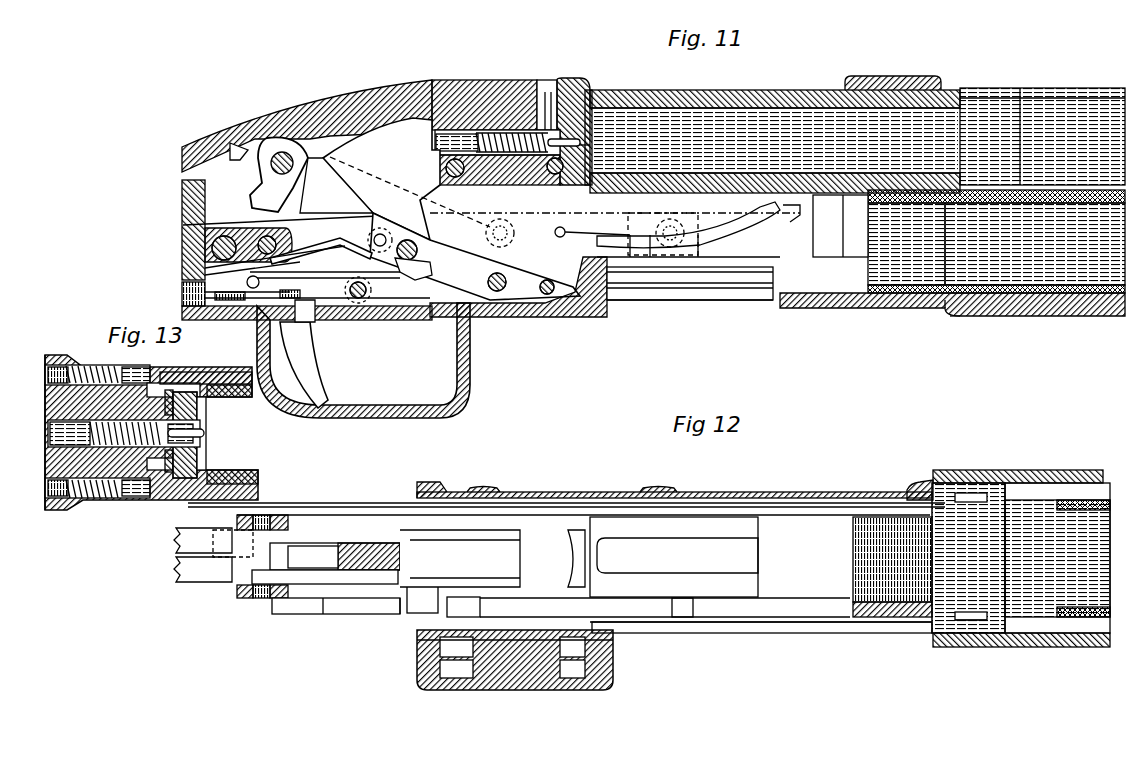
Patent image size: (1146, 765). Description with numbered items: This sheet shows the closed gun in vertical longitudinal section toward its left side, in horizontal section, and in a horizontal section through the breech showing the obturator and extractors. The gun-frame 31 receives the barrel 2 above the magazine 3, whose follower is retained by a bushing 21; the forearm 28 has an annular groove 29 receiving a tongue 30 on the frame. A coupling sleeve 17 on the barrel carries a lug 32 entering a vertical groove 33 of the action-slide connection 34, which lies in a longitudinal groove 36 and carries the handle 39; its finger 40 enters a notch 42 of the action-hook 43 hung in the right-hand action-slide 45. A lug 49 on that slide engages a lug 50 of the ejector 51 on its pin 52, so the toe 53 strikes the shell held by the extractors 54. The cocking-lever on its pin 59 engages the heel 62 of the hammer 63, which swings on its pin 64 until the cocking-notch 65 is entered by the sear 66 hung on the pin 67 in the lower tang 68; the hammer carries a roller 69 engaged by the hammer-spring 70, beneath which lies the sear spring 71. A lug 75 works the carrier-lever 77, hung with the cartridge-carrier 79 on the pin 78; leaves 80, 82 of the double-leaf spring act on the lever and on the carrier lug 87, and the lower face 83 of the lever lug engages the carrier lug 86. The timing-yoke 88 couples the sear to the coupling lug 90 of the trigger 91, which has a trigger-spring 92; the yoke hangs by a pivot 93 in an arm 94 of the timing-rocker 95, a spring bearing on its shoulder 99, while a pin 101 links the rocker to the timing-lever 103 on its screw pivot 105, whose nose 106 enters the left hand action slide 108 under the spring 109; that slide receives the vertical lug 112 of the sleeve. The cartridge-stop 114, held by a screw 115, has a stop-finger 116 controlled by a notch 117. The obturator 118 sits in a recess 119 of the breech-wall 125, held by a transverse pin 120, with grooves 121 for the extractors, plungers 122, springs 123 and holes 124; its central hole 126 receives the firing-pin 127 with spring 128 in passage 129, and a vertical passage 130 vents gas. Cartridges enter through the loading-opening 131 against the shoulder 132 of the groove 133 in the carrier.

In FIG. 11, the barrel 2 is at (1042, 126).
In FIG. 11, the magazine 3 is at (996, 248).
In FIG. 12, the magazine 3 is at (1057, 558).
In FIG. 12, the coupling sleeve 17 is at (1008, 558).
In FIG. 11, the bushing 21 is at (905, 278).
In FIG. 11, the forearm 28 is at (952, 315).
In FIG. 12, the forearm 28 is at (1057, 539).
In FIG. 11, the annular groove 29 is at (962, 316).
In FIG. 11, the tongue 30 is at (942, 310).
In FIG. 11, the gun-frame 31 is at (893, 74).
In FIG. 12, the gun-frame 31 is at (674, 487).
In FIG. 12, the lug 32 is at (966, 612).
In FIG. 12, the vertical groove 33 is at (970, 622).
In FIG. 12, the action-slide connection 34 is at (645, 628).
In FIG. 12, the longitudinal groove 36 is at (806, 620).
In FIG. 12, the handle 39 is at (425, 658).
In FIG. 12, the finger 40 is at (463, 607).
In FIG. 12, the notch 42 is at (684, 605).
In FIG. 12, the action-hook 43 is at (758, 633).
In FIG. 12, the right-hand action-slide 45 is at (377, 614).
In FIG. 12, the lug 49 is at (300, 614).
In FIG. 12, the lug 50 is at (422, 599).
In FIG. 12, the ejector 51 is at (460, 558).
In FIG. 11, the pin 52 is at (425, 163).
In FIG. 12, the toe 53 is at (570, 560).
In FIG. 11, the extractors 54 is at (592, 146).
In FIG. 13, the extractors 54 is at (212, 385).
In FIG. 11, the pin 59 is at (495, 292).
In FIG. 11, the heel 62 is at (455, 228).
In FIG. 11, the hammer 63 is at (381, 179).
In FIG. 12, the hammer 63 is at (362, 543).
In FIG. 11, the pin 64 is at (417, 248).
In FIG. 11, the cocking-notch 65 is at (413, 269).
In FIG. 11, the sear 66 is at (356, 282).
In FIG. 11, the pin 67 is at (358, 303).
In FIG. 11, the lower tang 68 is at (460, 350).
In FIG. 11, the antifriction roller 69 is at (372, 238).
In FIG. 11, the hammer-spring 70 is at (316, 255).
In FIG. 11, the sear spring 71 is at (300, 278).
In FIG. 12, the lug 75 is at (334, 614).
In FIG. 12, the carrier-lever 77 is at (313, 557).
In FIG. 11, the pin 78 is at (282, 150).
In FIG. 12, the pin 78 is at (255, 598).
In FIG. 11, the cartridge-carrier 79 is at (336, 185).
In FIG. 12, the cartridge-carrier 79 is at (335, 547).
In FIG. 12, the leaf 80 is at (203, 569).
In FIG. 12, the leaf 82 is at (203, 540).
In FIG. 12, the lower face 83 is at (228, 583).
In FIG. 11, the lug 86 is at (279, 174).
In FIG. 11, the lug 87 is at (243, 160).
In FIG. 12, the lug 87 is at (250, 520).
In FIG. 11, the timing-yoke 88 is at (290, 262).
In FIG. 11, the coupling lug 90 is at (295, 329).
In FIG. 11, the trigger 91 is at (315, 372).
In FIG. 11, the trigger-spring 92 is at (285, 300).
In FIG. 11, the pivot 93 is at (240, 302).
In FIG. 11, the arm 94 is at (190, 296).
In FIG. 11, the timing-rocker 95 is at (195, 222).
In FIG. 11, the shoulder 99 is at (263, 283).
In FIG. 11, the pin 101 is at (205, 246).
In FIG. 11, the timing-lever 103 is at (285, 226).
In FIG. 11, the screw pivot 105 is at (558, 227).
In FIG. 12, the screw pivot 105 is at (488, 486).
In FIG. 11, the nose 106 is at (799, 207).
In FIG. 11, the left hand action slide 108 is at (730, 200).
In FIG. 11, the spring 109 is at (735, 245).
In FIG. 12, the vertical lug 112 is at (972, 493).
In FIG. 11, the cartridge-stop 114 is at (834, 226).
In FIG. 11, the screw 115 is at (676, 222).
In FIG. 12, the screw 115 is at (660, 486).
In FIG. 11, the stop-finger 116 is at (840, 238).
In FIG. 11, the notch 117 is at (848, 200).
In FIG. 11, the obturator 118 is at (590, 95).
In FIG. 13, the obturator 118 is at (200, 413).
In FIG. 11, the recess 119 is at (490, 132).
In FIG. 13, the recess 119 is at (232, 400).
In FIG. 11, the transverse pin 120 is at (555, 176).
In FIG. 13, the grooves 121 is at (170, 395).
In FIG. 13, the plungers 122 is at (140, 370).
In FIG. 13, the springs 123 is at (85, 365).
In FIG. 13, the holes 124 is at (95, 449).
In FIG. 11, the breech-wall 125 is at (547, 80).
In FIG. 13, the breech-wall 125 is at (60, 512).
In FIG. 11, the central hole 126 is at (580, 150).
In FIG. 13, the central hole 126 is at (250, 410).
In FIG. 11, the firing-pin 127 is at (775, 122).
In FIG. 13, the firing-pin 127 is at (180, 372).
In FIG. 11, the spring 128 is at (478, 134).
In FIG. 13, the spring 128 is at (148, 417).
In FIG. 11, the passage 129 is at (480, 168).
In FIG. 13, the passage 129 is at (124, 419).
In FIG. 11, the vertical passage 130 is at (575, 78).
In FIG. 11, the loading-opening 131 is at (690, 308).
In FIG. 11, the shoulder 132 is at (607, 262).
In FIG. 12, the shoulder 132 is at (597, 556).
In FIG. 11, the groove 133 is at (690, 283).
In FIG. 12, the groove 133 is at (677, 555).